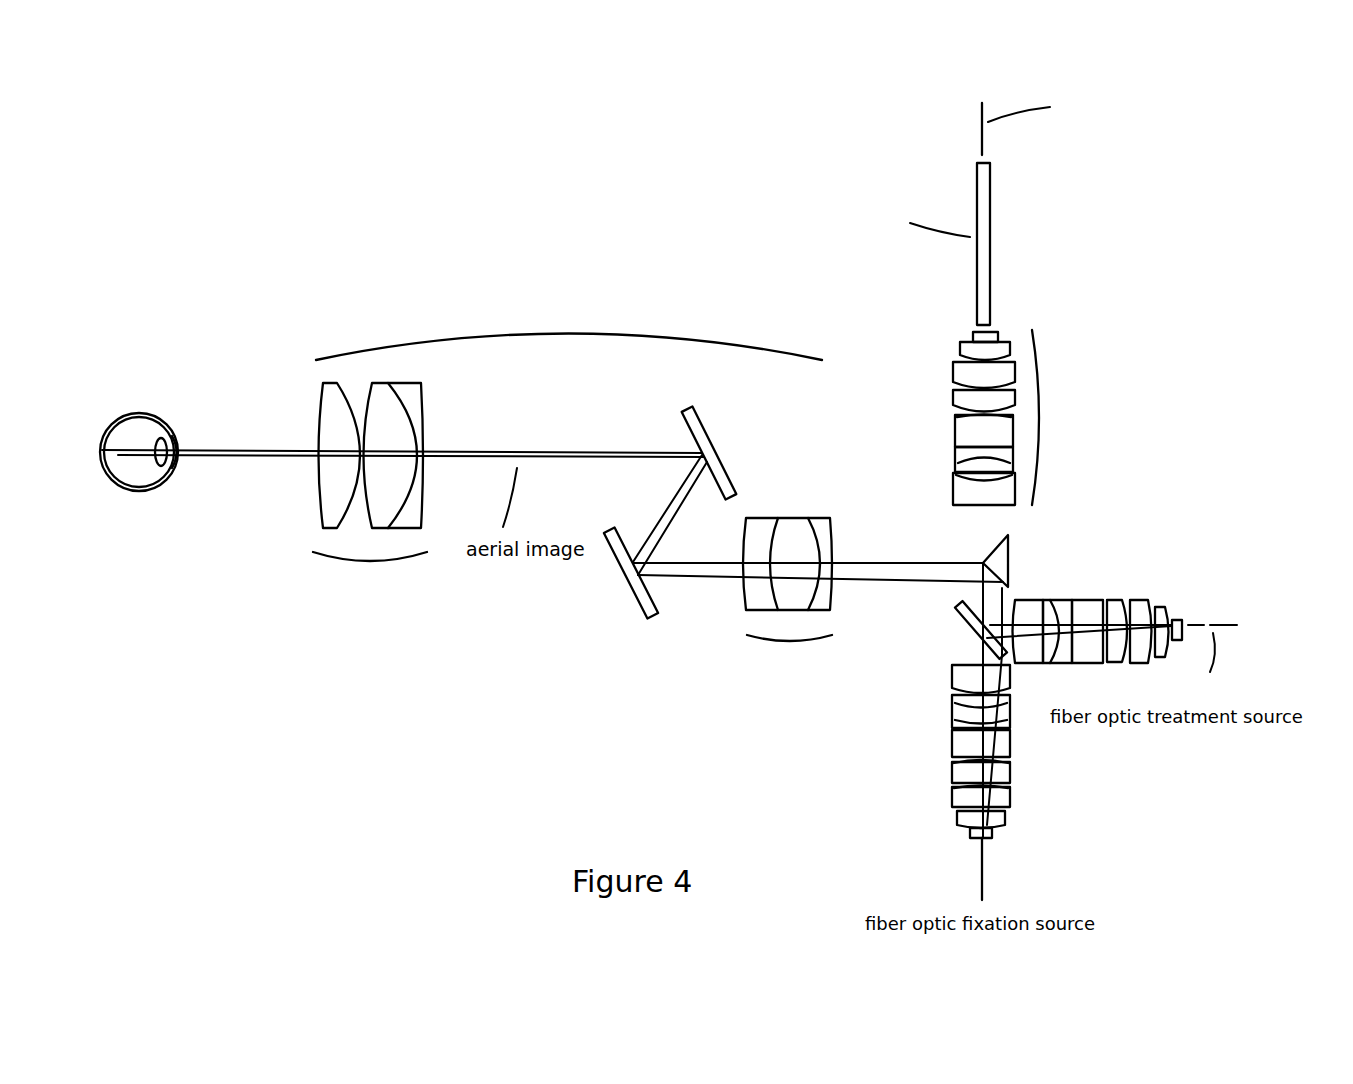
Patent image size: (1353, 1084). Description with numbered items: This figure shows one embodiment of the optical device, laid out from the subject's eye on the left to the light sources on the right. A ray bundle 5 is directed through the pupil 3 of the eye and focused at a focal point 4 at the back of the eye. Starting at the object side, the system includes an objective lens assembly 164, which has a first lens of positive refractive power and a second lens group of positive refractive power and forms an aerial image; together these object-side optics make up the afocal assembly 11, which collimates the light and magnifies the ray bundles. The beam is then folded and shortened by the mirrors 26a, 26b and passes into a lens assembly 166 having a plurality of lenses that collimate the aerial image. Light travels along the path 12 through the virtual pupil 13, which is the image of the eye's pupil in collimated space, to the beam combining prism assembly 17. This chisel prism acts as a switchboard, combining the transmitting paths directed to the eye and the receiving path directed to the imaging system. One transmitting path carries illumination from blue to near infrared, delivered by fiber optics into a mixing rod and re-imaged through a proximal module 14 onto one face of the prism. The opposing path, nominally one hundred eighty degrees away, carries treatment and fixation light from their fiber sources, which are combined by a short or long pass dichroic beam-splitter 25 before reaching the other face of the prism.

The pupil 3 is at (173, 435).
The focal point 4 is at (113, 447).
The ray bundle 5 is at (235, 442).
The afocal assembly 11 is at (563, 325).
The path 12 is at (865, 558).
The virtual pupil 13 is at (982, 558).
The proximal module 14 is at (1052, 423).
The beam combining prism assembly 17 is at (1017, 565).
The dichroic beam-splitter 25 is at (955, 632).
The mirror 26a is at (715, 442).
The mirror 26b is at (632, 610).
The objective lens assembly 164 is at (375, 565).
The lens assembly 166 is at (790, 650).